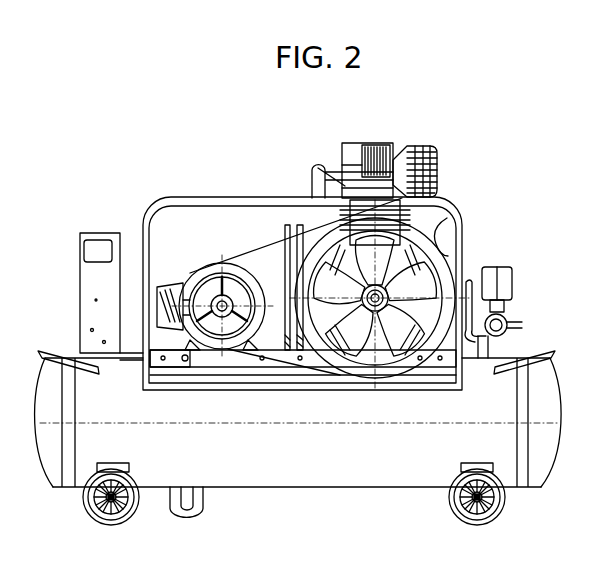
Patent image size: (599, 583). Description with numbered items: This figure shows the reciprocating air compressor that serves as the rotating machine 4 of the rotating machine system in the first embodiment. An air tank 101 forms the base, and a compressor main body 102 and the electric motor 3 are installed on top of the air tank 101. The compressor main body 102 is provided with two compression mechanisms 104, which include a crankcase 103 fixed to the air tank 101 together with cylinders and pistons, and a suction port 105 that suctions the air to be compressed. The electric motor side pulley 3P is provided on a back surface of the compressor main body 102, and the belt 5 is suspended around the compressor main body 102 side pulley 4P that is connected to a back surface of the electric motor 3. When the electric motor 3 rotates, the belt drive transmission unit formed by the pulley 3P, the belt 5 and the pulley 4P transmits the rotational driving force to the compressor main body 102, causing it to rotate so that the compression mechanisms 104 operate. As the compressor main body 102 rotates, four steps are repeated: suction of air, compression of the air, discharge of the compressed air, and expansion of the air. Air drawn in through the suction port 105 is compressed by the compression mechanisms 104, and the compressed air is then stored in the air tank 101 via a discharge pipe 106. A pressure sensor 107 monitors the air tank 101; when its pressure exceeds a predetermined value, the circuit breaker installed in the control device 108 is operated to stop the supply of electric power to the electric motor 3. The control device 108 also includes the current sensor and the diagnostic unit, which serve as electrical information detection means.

The electric motor 3 is at (248, 362).
The electric motor side pulley 3P is at (193, 273).
The rotating machine 4 is at (485, 247).
The compressor main body side pulley 4P is at (447, 220).
The belt 5 is at (267, 246).
The air tank 101 is at (297, 487).
The compressor main body 102 is at (455, 200).
The crankcase 103 is at (395, 365).
The compression mechanisms 104 is at (316, 168).
The suction port 105 is at (440, 160).
The discharge pipe 106 is at (285, 364).
The pressure sensor 107 is at (512, 300).
The control device 108 is at (90, 233).